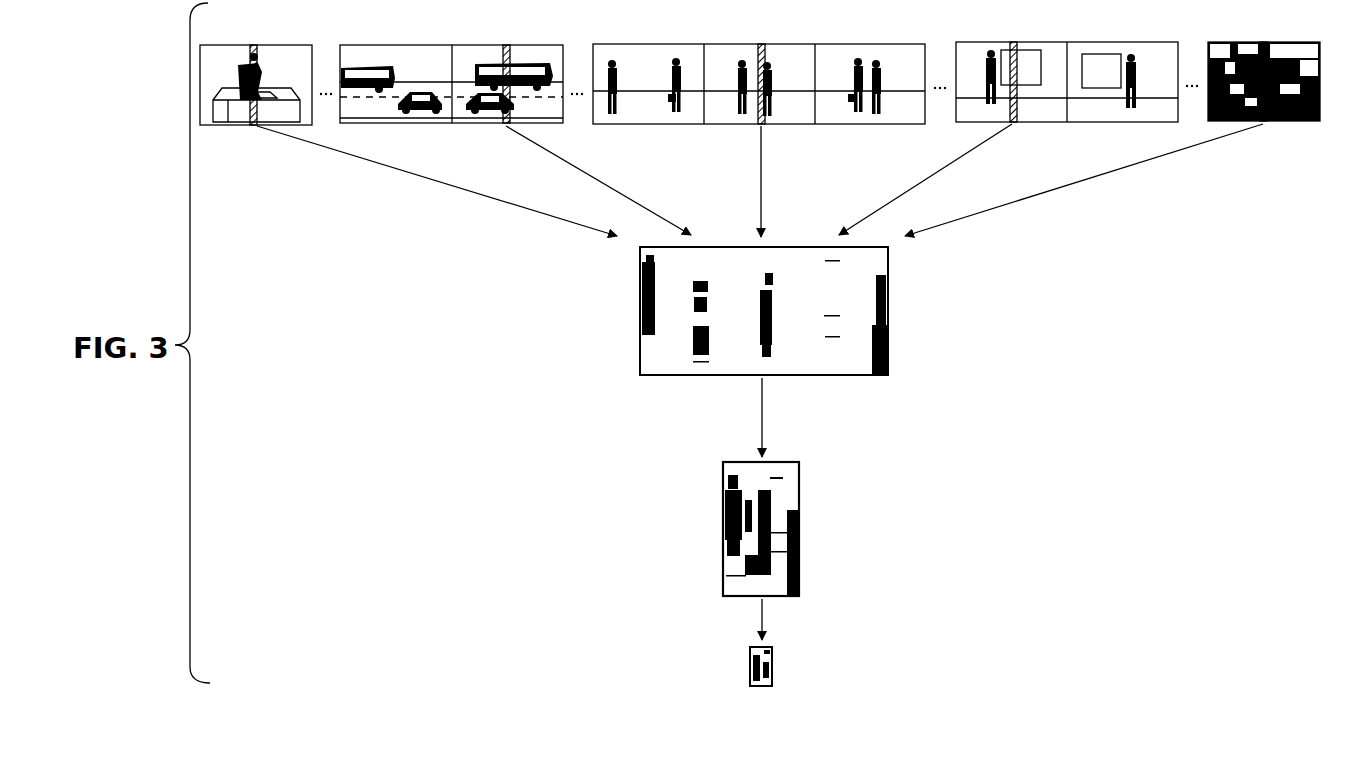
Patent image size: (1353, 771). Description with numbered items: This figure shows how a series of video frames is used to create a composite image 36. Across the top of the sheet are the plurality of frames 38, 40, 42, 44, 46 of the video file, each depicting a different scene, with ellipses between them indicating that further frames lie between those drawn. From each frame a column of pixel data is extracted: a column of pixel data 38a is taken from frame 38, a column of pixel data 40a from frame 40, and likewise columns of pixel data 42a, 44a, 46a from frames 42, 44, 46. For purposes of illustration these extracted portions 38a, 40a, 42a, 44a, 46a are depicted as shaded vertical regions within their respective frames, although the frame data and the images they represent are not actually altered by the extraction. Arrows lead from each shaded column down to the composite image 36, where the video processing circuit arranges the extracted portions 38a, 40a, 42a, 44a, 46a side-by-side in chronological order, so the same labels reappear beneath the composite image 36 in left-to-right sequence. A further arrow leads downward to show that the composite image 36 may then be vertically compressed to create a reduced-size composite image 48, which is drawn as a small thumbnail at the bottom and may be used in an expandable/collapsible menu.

The composite image 36 is at (722, 512).
The frame 38 is at (270, 44).
The column of pixel data 38a is at (248, 127).
The frame 40 is at (471, 44).
The column of pixel data 40a is at (503, 125).
The frame 42 is at (735, 44).
The column of pixel data 42a is at (759, 125).
The frame 44 is at (992, 42).
The column of pixel data 44a is at (1015, 123).
The frame 46 is at (1238, 40).
The column of pixel data 46a is at (1266, 123).
The reduced-size composite image 48 is at (748, 658).